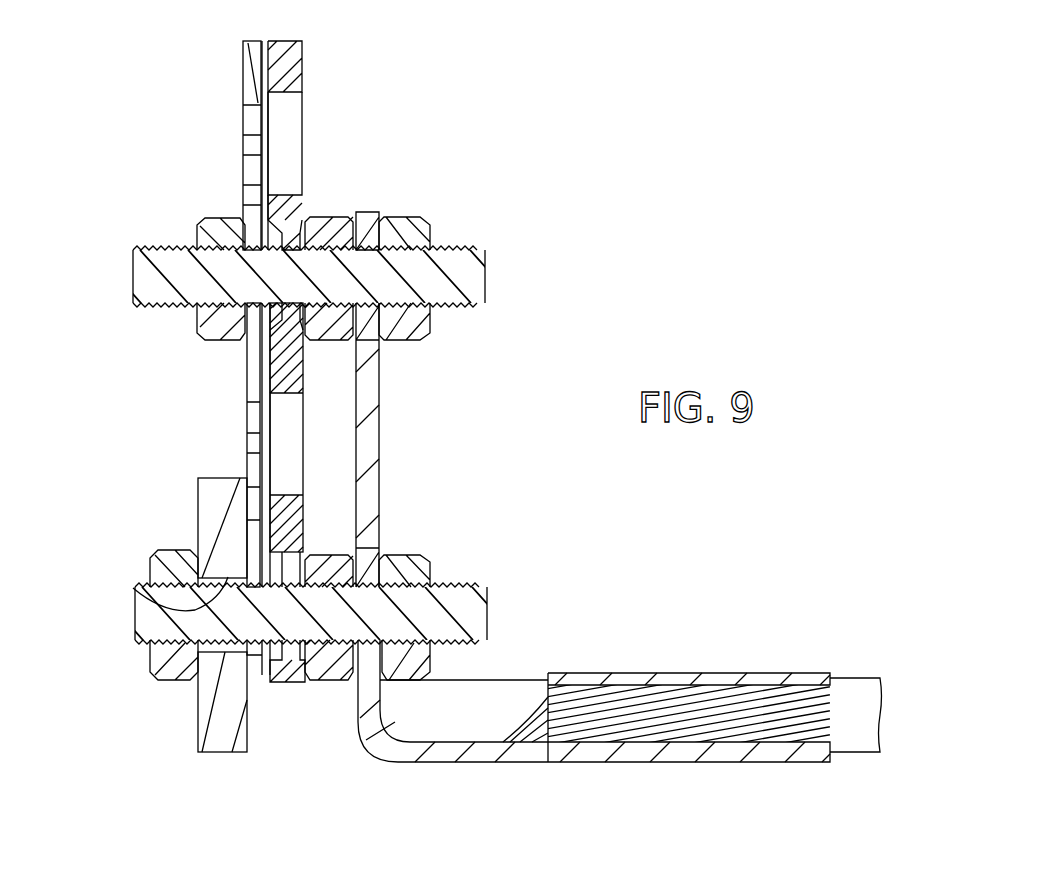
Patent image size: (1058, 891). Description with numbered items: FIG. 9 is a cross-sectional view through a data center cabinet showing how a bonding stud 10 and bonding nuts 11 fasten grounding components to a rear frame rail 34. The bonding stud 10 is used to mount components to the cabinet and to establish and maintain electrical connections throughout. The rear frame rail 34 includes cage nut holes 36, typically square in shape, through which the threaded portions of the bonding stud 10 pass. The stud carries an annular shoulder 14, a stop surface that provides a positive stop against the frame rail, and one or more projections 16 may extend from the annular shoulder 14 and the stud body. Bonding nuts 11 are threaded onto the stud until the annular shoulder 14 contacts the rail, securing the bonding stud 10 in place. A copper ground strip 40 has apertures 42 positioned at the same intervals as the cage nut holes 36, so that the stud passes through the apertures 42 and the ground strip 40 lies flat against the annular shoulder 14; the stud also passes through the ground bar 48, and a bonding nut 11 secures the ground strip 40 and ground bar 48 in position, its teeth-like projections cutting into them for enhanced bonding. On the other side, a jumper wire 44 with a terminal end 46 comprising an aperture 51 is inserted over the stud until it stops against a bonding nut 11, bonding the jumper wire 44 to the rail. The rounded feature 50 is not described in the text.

The bonding stud 10 is at (487, 272).
The bonding nut 11 is at (337, 218).
The annular shoulder 14 is at (262, 230).
The projection 16 is at (280, 205).
The rear frame rail 34 is at (300, 76).
The cage nut hole 36 is at (300, 113).
The copper ground strip 40 is at (248, 75).
The aperture 42 is at (247, 115).
The jumper wire 44 is at (848, 695).
The terminal end 46 is at (368, 715).
The ground bar 48 is at (198, 500).
The spherical surface 50 is at (133, 588).
The aperture 51 is at (383, 656).